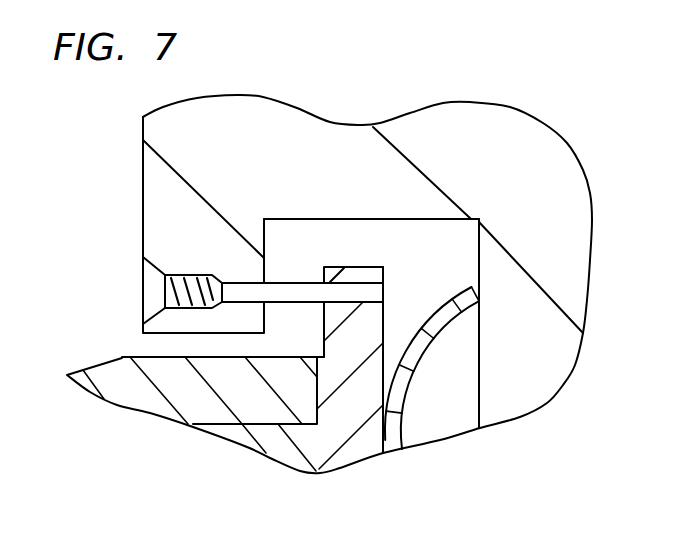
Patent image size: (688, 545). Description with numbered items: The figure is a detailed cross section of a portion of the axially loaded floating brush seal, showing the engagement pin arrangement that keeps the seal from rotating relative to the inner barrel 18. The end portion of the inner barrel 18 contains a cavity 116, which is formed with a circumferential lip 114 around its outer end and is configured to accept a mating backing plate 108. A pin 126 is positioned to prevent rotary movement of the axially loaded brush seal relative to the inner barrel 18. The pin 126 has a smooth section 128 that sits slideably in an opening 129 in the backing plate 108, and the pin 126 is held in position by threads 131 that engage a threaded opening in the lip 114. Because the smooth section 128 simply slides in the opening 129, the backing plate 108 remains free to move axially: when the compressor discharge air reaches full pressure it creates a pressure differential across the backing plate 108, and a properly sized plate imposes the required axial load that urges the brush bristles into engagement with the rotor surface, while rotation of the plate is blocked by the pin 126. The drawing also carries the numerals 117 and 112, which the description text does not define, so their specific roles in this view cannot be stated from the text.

The inner barrel 18 is at (480, 113).
The circumferential lip 114 is at (142, 247).
The threads 131 is at (193, 275).
The smooth section 128 is at (292, 282).
The pin 126 is at (346, 282).
The opening 129 is at (372, 282).
The cavity 116 is at (482, 267).
The support column 117 is at (481, 400).
The curved seal member 112 is at (446, 326).
The backing plate 108 is at (265, 440).